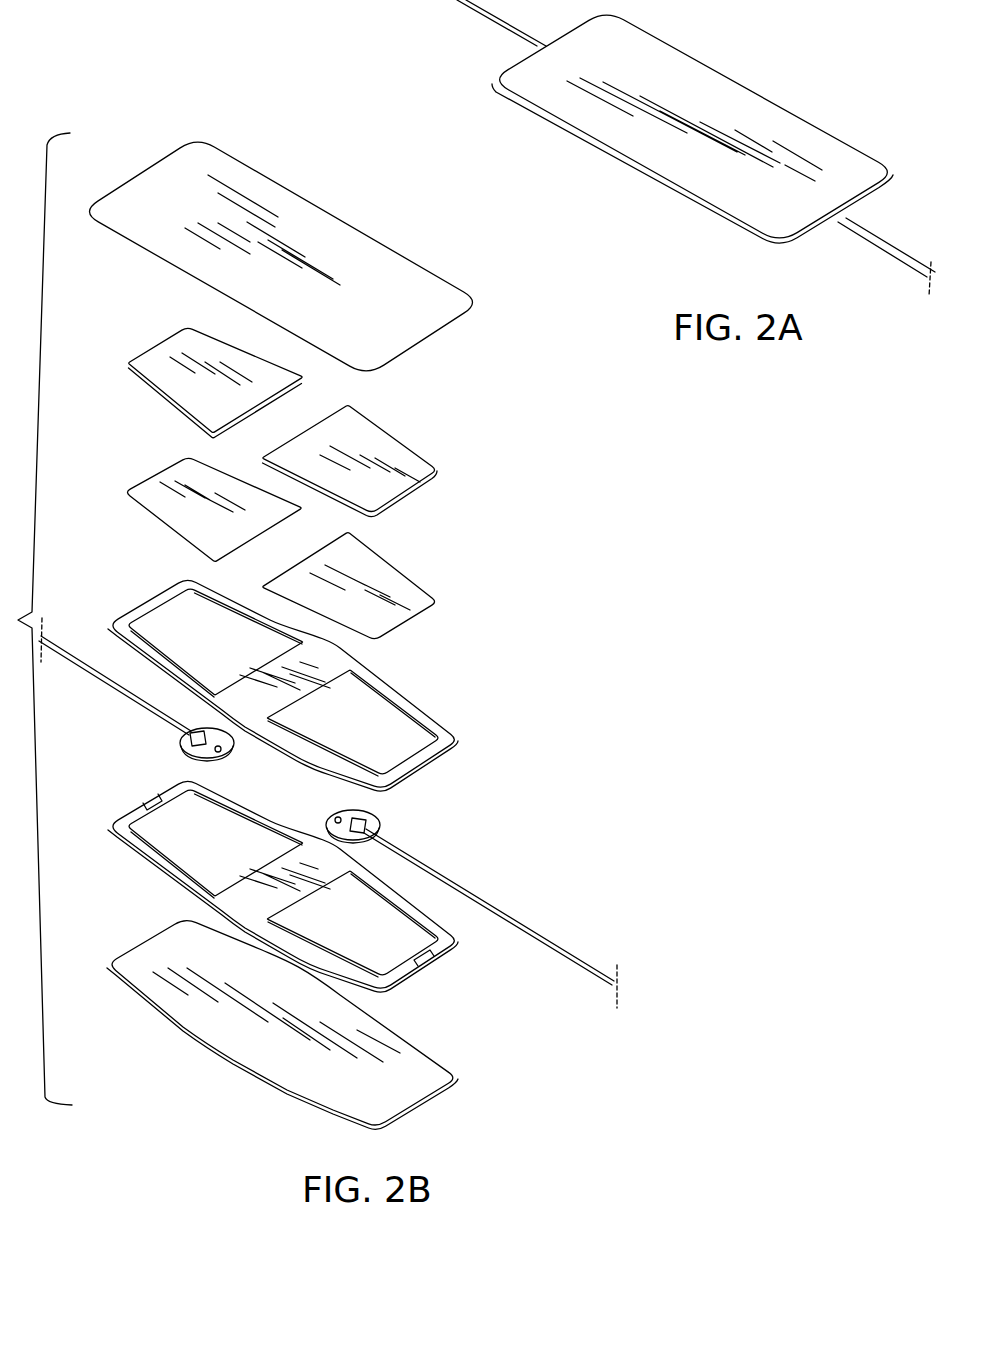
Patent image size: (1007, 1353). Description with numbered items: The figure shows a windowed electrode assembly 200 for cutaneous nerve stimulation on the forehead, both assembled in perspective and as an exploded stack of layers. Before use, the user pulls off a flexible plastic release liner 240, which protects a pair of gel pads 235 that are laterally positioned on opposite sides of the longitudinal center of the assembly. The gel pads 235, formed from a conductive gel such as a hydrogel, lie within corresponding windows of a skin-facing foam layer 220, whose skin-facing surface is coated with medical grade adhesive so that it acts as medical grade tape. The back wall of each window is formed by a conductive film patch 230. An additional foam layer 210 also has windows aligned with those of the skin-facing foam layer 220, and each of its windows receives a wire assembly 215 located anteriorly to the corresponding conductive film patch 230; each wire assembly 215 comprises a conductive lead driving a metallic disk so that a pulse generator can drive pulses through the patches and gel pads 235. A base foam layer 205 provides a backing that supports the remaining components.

In FIG. 2A, the windowed electrode assembly 200 is at (743, 100).
In FIG. 2B, the windowed electrode assembly 200 is at (367, 147).
In FIG. 2B, the base foam layer 205 is at (430, 1080).
In FIG. 2B, the additional foam layer 210 is at (445, 950).
In FIG. 2B, the wire assembly 215 is at (500, 913).
In FIG. 2B, the skin-facing foam layer 220 is at (423, 722).
In FIG. 2B, the conductive film patch 230 is at (418, 598).
In FIG. 2B, the gel pad 235 is at (417, 463).
In FIG. 2B, the release liner 240 is at (447, 283).